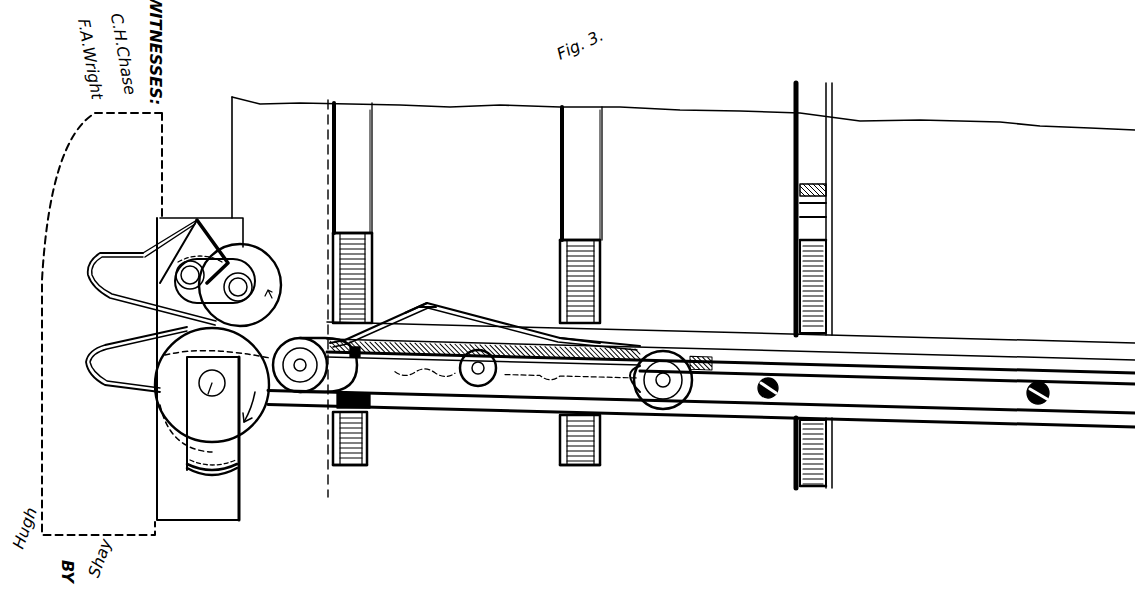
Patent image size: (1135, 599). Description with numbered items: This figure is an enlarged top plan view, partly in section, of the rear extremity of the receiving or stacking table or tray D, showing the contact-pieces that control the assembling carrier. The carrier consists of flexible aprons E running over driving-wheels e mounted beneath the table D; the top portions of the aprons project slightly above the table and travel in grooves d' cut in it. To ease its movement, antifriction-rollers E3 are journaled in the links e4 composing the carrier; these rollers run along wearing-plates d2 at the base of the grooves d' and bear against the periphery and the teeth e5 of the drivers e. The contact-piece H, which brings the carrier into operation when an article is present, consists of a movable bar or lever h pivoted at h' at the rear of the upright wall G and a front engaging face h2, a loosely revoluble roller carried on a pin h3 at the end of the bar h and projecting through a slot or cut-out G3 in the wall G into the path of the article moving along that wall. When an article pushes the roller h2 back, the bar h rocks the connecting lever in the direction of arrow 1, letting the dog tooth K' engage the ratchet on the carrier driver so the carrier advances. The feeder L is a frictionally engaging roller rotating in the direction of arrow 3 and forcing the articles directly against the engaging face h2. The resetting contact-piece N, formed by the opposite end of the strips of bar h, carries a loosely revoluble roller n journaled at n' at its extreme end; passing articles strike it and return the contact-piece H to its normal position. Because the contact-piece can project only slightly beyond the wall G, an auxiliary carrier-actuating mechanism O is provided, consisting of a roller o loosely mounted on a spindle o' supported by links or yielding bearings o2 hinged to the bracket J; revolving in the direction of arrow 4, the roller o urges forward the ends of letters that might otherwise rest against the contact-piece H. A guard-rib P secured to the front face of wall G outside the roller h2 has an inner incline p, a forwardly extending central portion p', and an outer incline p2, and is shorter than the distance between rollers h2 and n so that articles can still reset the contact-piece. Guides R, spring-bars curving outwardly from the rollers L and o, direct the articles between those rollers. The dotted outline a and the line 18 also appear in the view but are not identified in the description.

The section line 18 is at (329, 299).
The dotted outline of casing a is at (163, 196).
The table or tray D is at (683, 165).
The bracket J is at (200, 369).
The feeder L is at (168, 374).
The arrow 1 is at (212, 395).
The arrow 3 is at (246, 405).
The engaging face or roller o is at (240, 277).
The spindle o' is at (237, 265).
The links or yielding bearings o2 is at (215, 281).
The arrow 4 is at (271, 286).
The auxiliary carrier-actuating mechanism O is at (197, 247).
The guides R is at (116, 332).
The upright wall G is at (918, 358).
The slot or cut-out G3 is at (335, 340).
The movable bar or lever h is at (454, 395).
The contact-piece H is at (302, 340).
The engaging face h2 is at (297, 346).
The pin h3 is at (300, 368).
The tooth K' is at (371, 379).
The guard-rib P is at (447, 307).
The inner incline p is at (402, 298).
The forwardly-extending central portion p' is at (430, 289).
The outer incline p2 is at (520, 328).
The pivot h' is at (490, 334).
The resetting contact-piece N is at (647, 362).
The engaging face or roller n is at (668, 351).
The journal n' is at (662, 408).
The wearing-plates d2 is at (810, 110).
The grooves d' is at (582, 175).
The driving-wheels e is at (838, 446).
The teeth e5 is at (803, 498).
The links e4 is at (838, 470).
The flexible aprons E is at (832, 190).
The antifriction-rollers E3 is at (848, 253).